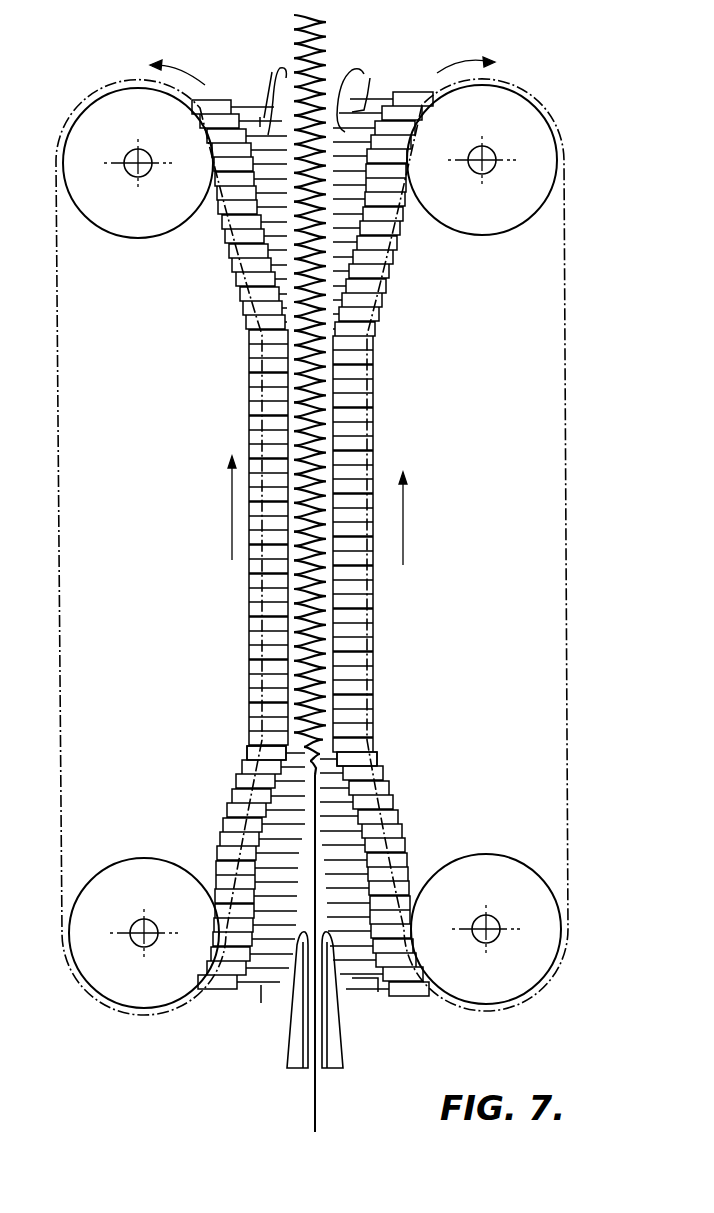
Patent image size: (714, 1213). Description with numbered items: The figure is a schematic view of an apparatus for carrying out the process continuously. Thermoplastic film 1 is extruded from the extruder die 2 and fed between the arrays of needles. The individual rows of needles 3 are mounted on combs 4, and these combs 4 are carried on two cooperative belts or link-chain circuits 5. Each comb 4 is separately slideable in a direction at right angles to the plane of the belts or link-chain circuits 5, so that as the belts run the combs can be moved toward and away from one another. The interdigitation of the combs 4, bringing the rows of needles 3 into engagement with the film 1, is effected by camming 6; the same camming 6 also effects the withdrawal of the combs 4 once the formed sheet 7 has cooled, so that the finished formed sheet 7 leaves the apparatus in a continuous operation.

The thermoplastic film 1 is at (317, 851).
The extruder die 2 is at (296, 1034).
The rows of needles 3 is at (368, 1034).
The combs 4 is at (236, 288).
The belts or link-chain circuits 5 is at (565, 466).
The camming 6 is at (250, 749).
The formed sheet 7 is at (322, 41).